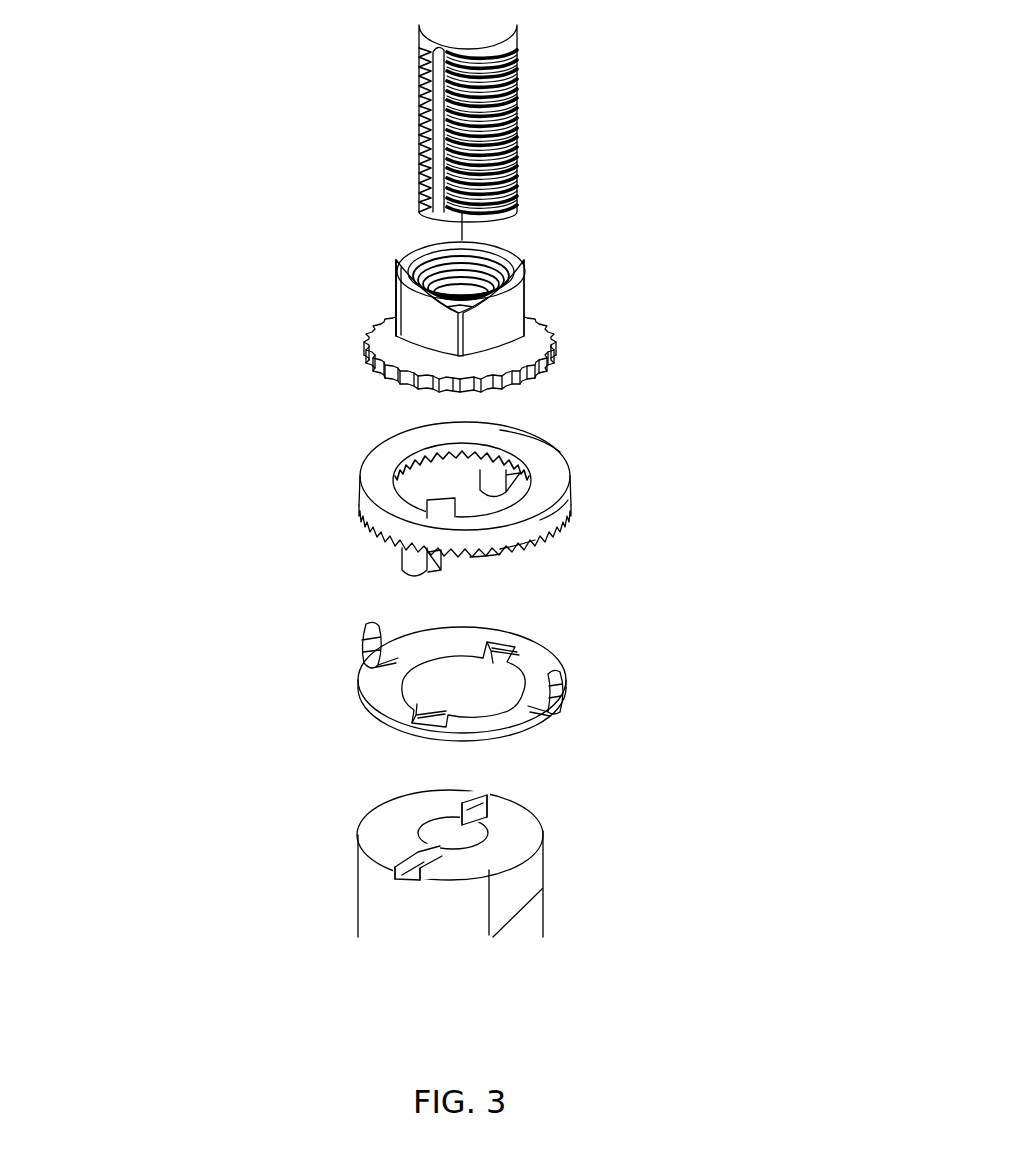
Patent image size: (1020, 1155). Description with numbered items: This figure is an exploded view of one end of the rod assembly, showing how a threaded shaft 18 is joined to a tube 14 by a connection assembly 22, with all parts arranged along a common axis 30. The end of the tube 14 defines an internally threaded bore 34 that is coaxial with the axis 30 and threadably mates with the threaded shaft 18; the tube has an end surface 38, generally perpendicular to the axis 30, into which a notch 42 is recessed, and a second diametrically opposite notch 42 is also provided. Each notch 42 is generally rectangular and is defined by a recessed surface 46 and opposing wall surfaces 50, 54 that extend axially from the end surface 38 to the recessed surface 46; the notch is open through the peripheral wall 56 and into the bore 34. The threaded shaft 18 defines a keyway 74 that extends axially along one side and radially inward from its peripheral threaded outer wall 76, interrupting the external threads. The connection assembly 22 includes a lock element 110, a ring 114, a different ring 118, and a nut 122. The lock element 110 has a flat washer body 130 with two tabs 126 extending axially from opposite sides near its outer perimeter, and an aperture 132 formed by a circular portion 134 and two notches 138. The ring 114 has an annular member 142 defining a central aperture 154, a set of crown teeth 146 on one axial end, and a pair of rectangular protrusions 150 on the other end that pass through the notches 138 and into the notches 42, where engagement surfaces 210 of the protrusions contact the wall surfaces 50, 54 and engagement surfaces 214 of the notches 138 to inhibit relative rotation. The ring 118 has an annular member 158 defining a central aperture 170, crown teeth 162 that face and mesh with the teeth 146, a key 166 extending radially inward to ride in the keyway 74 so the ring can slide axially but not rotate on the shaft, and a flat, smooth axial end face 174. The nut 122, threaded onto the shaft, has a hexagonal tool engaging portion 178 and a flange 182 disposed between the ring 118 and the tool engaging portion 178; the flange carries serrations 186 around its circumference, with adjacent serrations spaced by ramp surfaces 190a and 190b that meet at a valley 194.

The tube 14 is at (454, 888).
The threaded shaft 18 is at (467, 123).
The connection assembly 22 is at (449, 320).
The axis 30 is at (463, 230).
The bore 34 is at (425, 835).
The end surface 38 is at (497, 848).
The notch 42 is at (508, 798).
The recessed surface 46 is at (494, 812).
The wall surface 50 is at (455, 804).
The wall surface 54 is at (540, 830).
The peripheral wall 56 is at (373, 912).
The keyway 74 is at (445, 108).
The peripheral threaded outer wall 76 is at (422, 146).
The lock element 110 is at (461, 685).
The ring 114 is at (520, 560).
The ring 118 is at (484, 517).
The nut 122 is at (520, 268).
The tab 126 is at (365, 632).
The washer body 130 is at (510, 722).
The aperture 132 is at (420, 705).
The circular portion 134 is at (400, 680).
The notch 138 is at (425, 720).
The annular member 142 is at (525, 550).
The teeth 146 is at (545, 535).
The protrusion 150 is at (410, 560).
The central aperture 154 is at (405, 478).
The annular member 158 is at (560, 472).
The teeth 162 is at (492, 516).
The key 166 is at (392, 515).
The central aperture 170 is at (415, 450).
The axial end face 174 is at (378, 494).
The tool engaging portion 178 is at (505, 316).
The flange 182 is at (390, 330).
The serrations 186 is at (452, 359).
The ramp surface 190a is at (470, 375).
The ramp surface 190b is at (437, 370).
The valley 194 is at (385, 356).
The engagement surfaces 210 is at (525, 475).
The engagement surfaces 214 is at (490, 660).